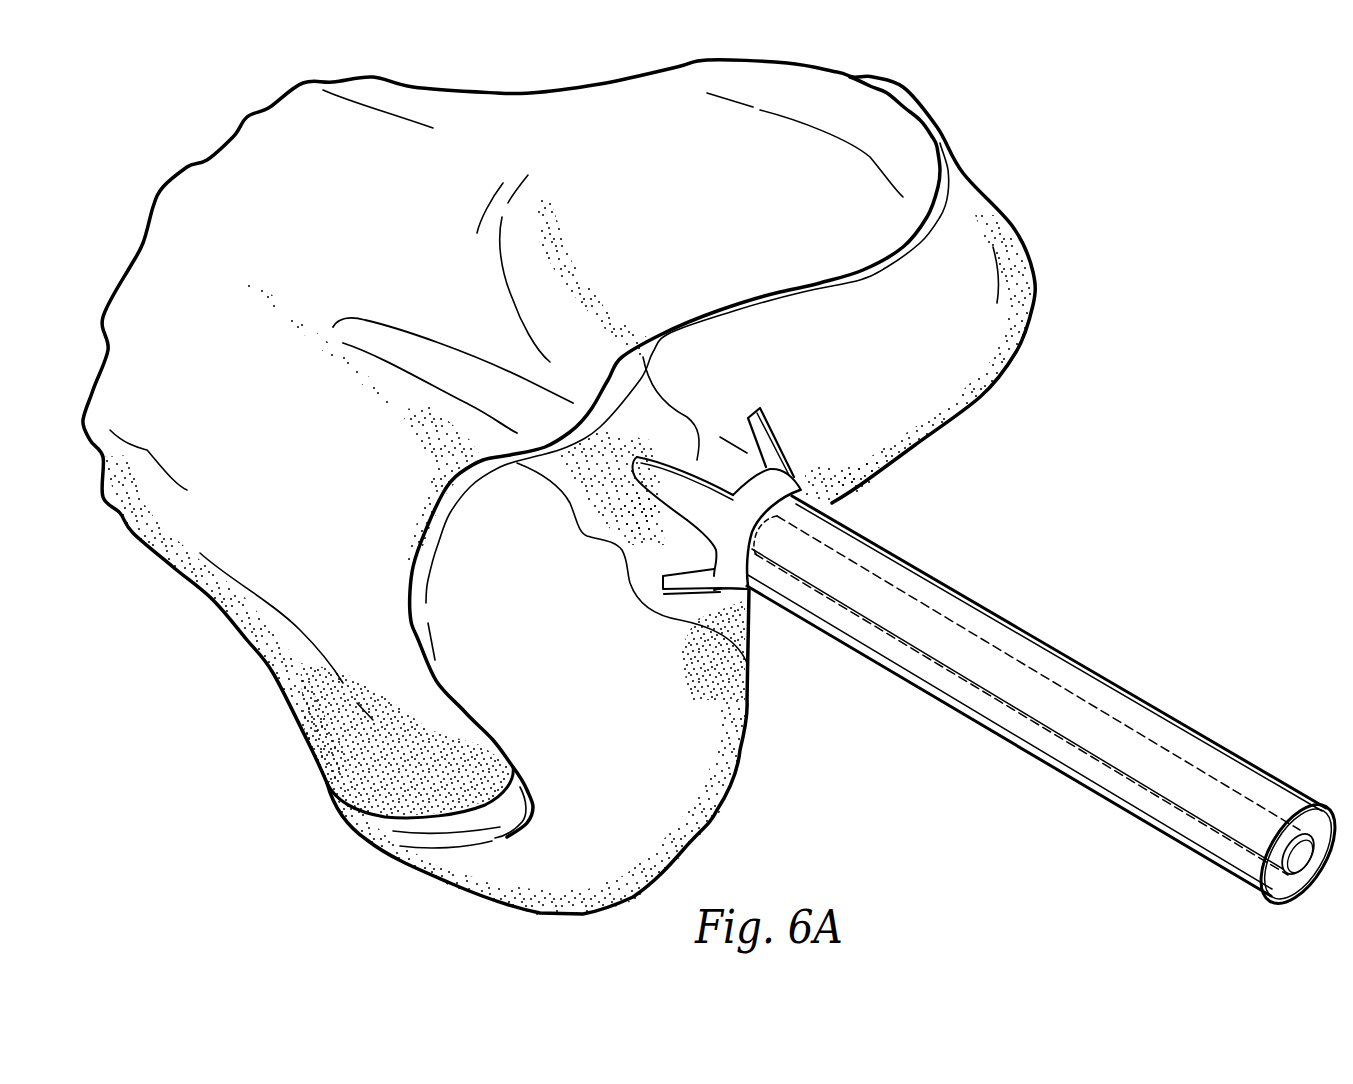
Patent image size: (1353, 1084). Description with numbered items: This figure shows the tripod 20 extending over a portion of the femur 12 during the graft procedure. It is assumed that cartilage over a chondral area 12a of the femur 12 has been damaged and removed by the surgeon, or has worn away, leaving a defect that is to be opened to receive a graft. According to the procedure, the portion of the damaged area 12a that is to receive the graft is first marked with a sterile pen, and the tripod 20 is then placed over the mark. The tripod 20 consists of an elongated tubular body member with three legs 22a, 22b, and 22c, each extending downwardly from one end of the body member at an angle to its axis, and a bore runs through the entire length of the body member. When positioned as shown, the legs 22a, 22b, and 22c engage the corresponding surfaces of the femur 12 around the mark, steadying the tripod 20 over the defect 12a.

The femur 12 is at (685, 195).
The chondral area 12a is at (626, 558).
The tripod 20 is at (1053, 614).
The leg 22a is at (660, 617).
The leg 22b is at (667, 461).
The leg 22c is at (778, 430).